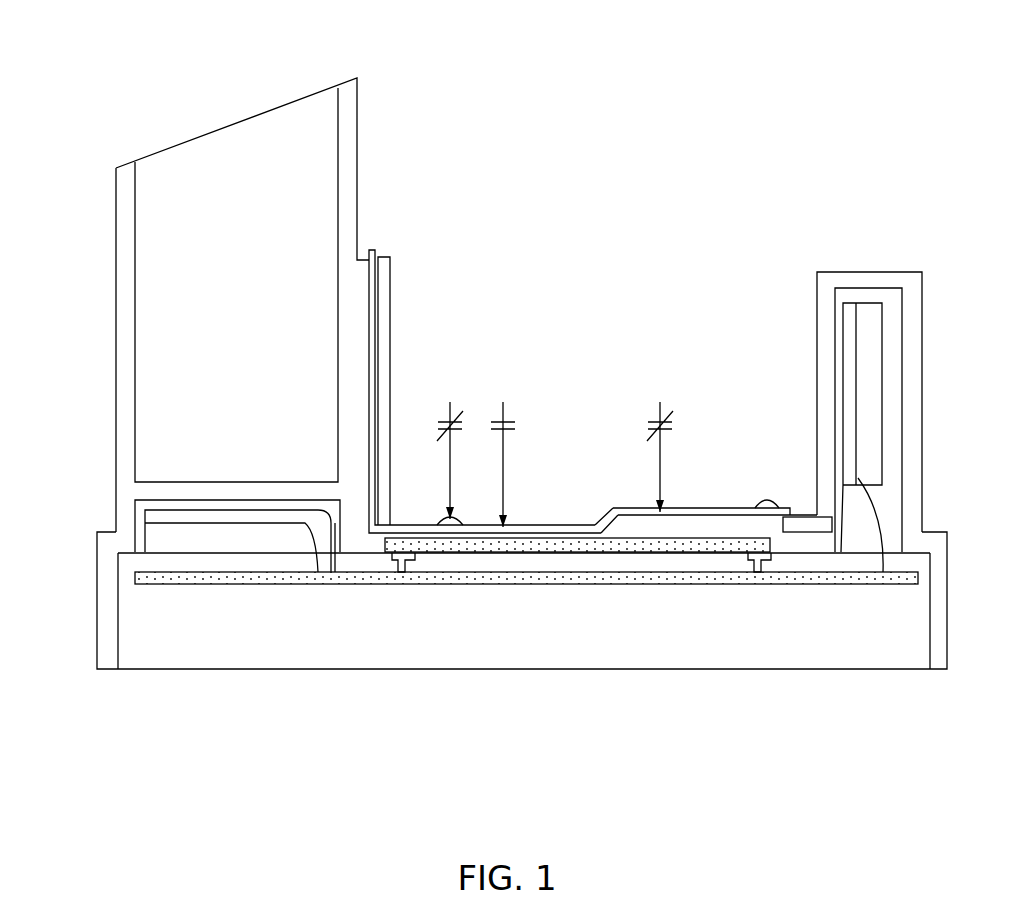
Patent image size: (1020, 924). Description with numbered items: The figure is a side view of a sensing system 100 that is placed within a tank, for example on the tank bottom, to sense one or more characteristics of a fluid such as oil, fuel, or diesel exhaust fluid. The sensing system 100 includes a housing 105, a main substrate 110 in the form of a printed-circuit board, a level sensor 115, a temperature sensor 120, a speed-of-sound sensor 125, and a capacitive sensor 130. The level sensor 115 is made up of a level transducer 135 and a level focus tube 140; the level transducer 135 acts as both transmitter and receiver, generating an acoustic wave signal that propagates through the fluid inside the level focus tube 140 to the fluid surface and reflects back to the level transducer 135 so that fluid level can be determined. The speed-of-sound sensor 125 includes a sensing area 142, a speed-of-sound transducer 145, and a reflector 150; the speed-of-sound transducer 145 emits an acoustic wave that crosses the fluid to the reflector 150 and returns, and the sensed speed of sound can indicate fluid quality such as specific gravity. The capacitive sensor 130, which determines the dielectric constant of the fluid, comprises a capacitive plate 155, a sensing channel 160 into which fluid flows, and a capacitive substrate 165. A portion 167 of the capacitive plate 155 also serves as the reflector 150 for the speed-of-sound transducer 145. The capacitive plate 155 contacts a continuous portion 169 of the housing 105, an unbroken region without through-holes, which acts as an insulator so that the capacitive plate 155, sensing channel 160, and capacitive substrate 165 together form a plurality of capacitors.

The sensing system 100 is at (803, 80).
The housing 105 is at (95, 587).
The main substrate 110 is at (237, 588).
The level sensor 115 is at (153, 110).
The temperature sensor 120 is at (822, 533).
The speed-of-sound sensor 125 is at (745, 305).
The capacitive sensor 130 is at (626, 475).
The level transducer 135 is at (210, 505).
The level focus tube 140 is at (313, 93).
The sensing area 142 is at (507, 343).
The speed-of-sound transducer 145 is at (843, 398).
The reflector 150 is at (380, 320).
The capacitive plate 155 is at (598, 514).
The sensing channel 160 is at (641, 537).
The capacitive substrate 165 is at (505, 550).
The portion of the capacitive plate 167 is at (384, 391).
The continuous portion of the housing 169 is at (434, 542).